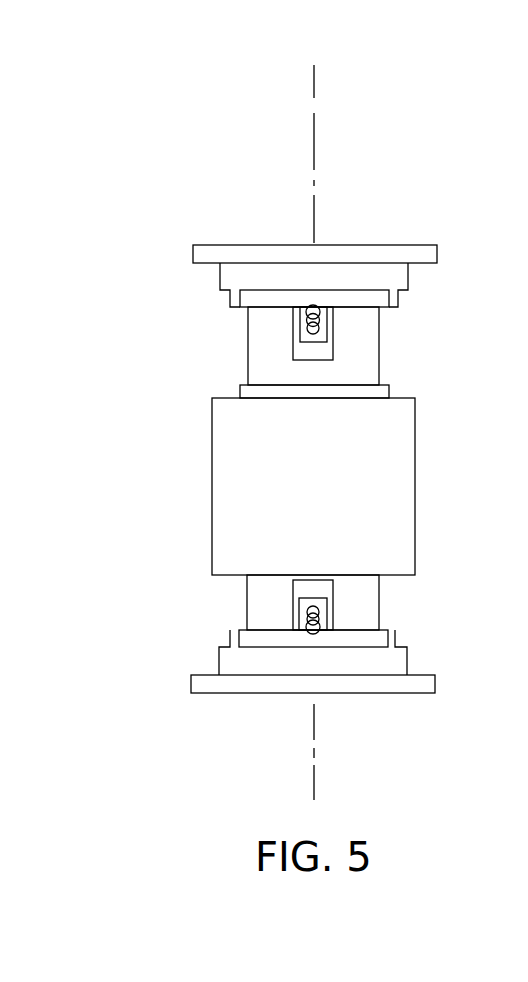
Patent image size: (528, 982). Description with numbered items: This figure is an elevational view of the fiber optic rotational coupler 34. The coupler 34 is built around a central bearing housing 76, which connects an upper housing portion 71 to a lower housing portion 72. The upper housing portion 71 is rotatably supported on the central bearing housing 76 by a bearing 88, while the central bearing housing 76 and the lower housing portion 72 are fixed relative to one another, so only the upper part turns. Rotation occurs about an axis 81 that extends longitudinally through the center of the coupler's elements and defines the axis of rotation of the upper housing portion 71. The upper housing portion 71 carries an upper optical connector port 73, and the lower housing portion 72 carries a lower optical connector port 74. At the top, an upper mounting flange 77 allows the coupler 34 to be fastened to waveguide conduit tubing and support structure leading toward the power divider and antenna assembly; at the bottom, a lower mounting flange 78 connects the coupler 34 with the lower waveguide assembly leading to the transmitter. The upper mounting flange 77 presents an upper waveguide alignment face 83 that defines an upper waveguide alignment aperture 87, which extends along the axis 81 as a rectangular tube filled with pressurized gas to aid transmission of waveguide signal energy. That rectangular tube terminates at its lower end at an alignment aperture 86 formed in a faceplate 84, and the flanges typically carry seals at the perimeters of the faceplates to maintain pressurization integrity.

The fiber optic rotational coupler 34 is at (405, 150).
The upper housing portion 71 is at (379, 352).
The lower housing portion 72 is at (365, 605).
The upper optical connector port 73 is at (291, 330).
The lower optical connector port 74 is at (291, 612).
The central bearing housing 76 is at (222, 477).
The upper mounting flange 77 is at (434, 274).
The lower mounting flange 78 is at (438, 676).
The axis 81 is at (314, 116).
The upper waveguide alignment face 83 is at (356, 241).
The faceplate 84 is at (256, 697).
The alignment aperture 86 is at (347, 697).
The upper waveguide alignment aperture 87 is at (270, 241).
The bearing 88 is at (394, 392).